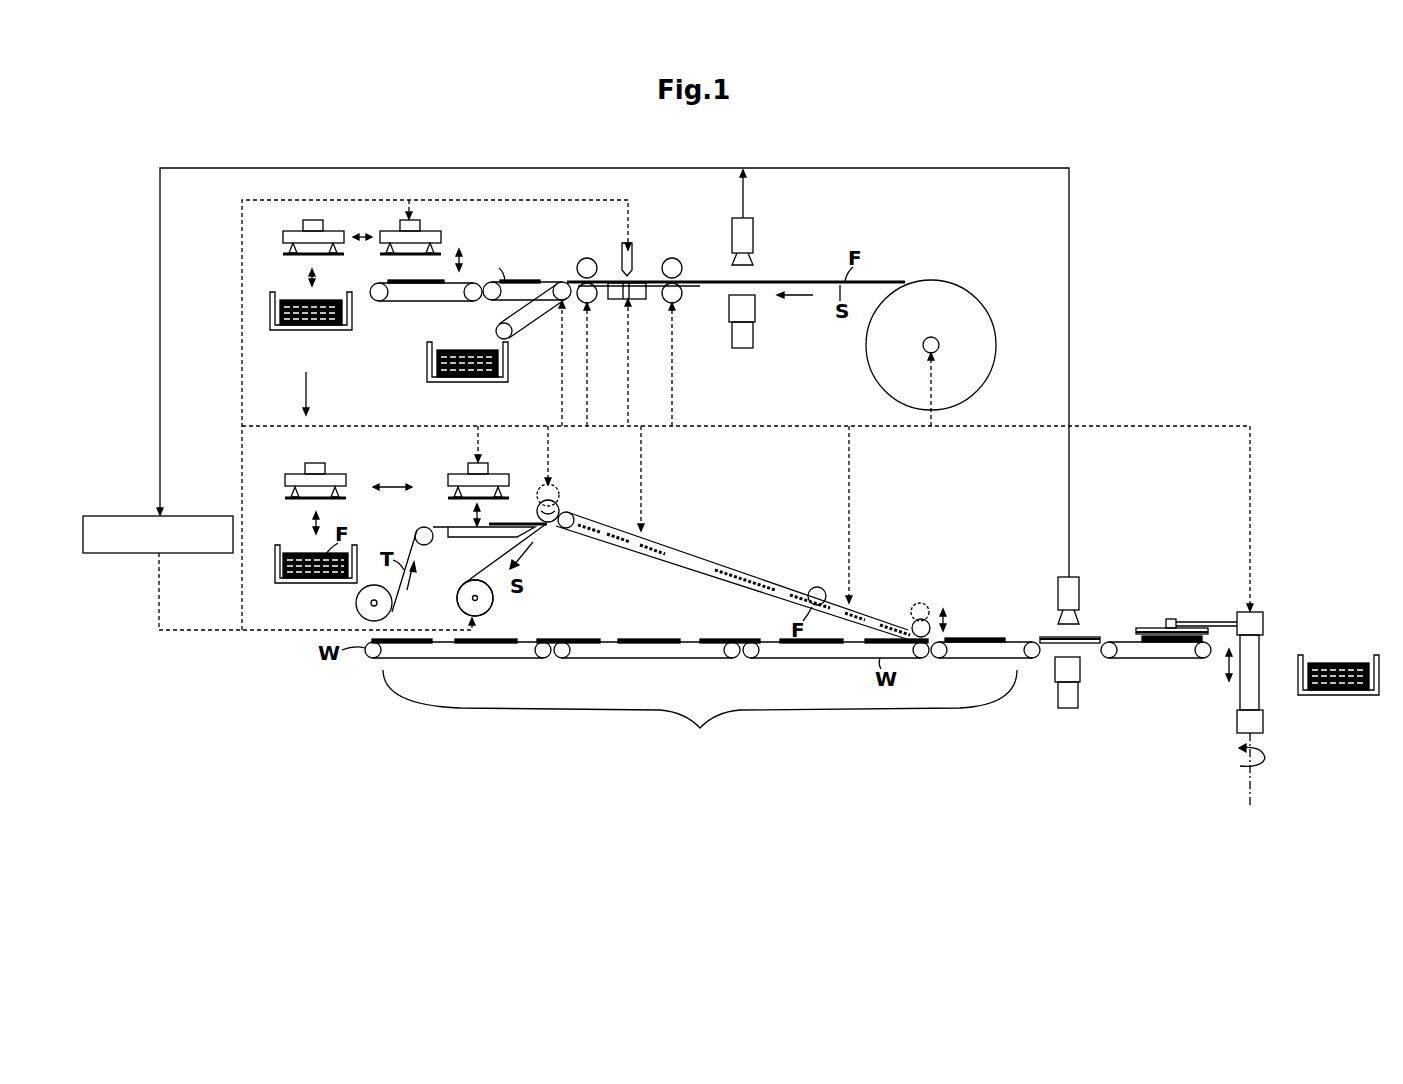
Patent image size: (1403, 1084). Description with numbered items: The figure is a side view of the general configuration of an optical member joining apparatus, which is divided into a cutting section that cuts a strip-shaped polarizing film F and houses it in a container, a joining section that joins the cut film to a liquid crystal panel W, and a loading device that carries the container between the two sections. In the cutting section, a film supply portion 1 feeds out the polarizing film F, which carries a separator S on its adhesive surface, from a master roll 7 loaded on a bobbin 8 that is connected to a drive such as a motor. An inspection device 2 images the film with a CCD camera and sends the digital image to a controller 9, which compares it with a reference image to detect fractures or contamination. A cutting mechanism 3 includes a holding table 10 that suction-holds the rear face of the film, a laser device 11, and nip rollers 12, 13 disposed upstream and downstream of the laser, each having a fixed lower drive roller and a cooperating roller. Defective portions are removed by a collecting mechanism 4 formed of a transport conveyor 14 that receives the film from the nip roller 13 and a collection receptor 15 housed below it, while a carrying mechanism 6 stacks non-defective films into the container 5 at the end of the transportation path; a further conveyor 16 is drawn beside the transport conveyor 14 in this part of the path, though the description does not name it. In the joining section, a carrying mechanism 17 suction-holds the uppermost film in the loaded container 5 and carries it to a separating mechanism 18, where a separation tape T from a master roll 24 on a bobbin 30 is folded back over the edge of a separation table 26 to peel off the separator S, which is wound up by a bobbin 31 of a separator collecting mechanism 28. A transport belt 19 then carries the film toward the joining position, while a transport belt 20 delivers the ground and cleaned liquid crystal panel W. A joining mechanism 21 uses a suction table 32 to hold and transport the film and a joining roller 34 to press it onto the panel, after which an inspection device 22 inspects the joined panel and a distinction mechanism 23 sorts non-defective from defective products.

The film supply portion 1 is at (983, 264).
The inspection device 2 is at (757, 298).
The cutting mechanism 3 is at (636, 191).
The collecting mechanism 4 is at (529, 276).
The container 5 is at (352, 322).
The carrying mechanism 6 is at (400, 222).
The master roll 7 is at (992, 316).
The bobbin 8 is at (936, 340).
The controller 9 is at (115, 515).
The holding table 10 is at (645, 300).
The laser device 11 is at (633, 252).
The nip roller 12 is at (676, 283).
The nip roller 13 is at (590, 283).
The transport conveyor 14 is at (496, 322).
The collection receptor 15 is at (427, 368).
The conveyor 16 is at (428, 302).
The carrying mechanism 17 is at (466, 464).
The separating mechanism 18 is at (551, 537).
The transport belt 19 is at (674, 547).
The transport belt 20 is at (691, 697).
The joining mechanism 21 is at (864, 591).
The inspection device 22 is at (1077, 682).
The distinction mechanism 23 is at (1146, 628).
The master roll 24 is at (356, 603).
The separation table 26 is at (466, 540).
The separator collecting mechanism 28 is at (497, 608).
The bobbin 30 is at (377, 606).
The bobbin 31 is at (473, 598).
The suction table 32 is at (829, 588).
The joining roller 34 is at (926, 607).